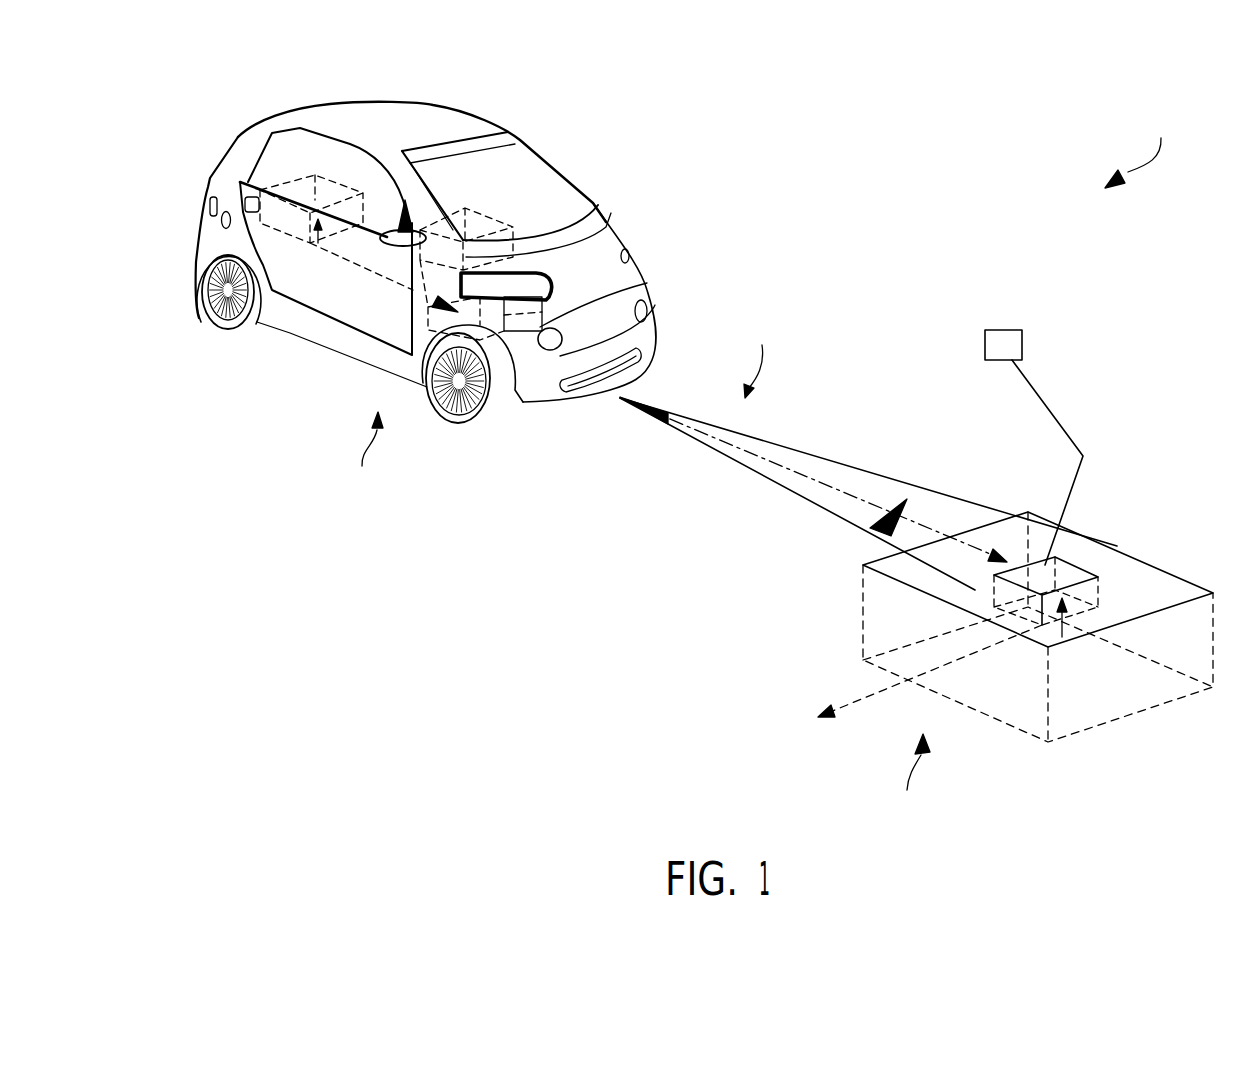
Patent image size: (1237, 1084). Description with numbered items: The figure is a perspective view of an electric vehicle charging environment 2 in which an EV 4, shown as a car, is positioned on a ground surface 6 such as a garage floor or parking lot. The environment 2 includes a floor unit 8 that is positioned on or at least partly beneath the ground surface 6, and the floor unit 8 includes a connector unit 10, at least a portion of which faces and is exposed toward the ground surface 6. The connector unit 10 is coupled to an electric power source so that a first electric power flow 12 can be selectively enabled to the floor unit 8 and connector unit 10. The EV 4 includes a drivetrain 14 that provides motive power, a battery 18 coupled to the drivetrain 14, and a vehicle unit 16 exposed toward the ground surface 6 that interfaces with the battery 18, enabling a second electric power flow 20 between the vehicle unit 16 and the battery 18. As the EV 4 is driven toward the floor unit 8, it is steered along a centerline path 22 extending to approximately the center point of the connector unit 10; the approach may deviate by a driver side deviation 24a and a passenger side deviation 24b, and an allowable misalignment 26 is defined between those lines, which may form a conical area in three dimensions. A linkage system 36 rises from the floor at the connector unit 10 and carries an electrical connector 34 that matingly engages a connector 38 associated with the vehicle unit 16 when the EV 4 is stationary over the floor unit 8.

The electric vehicle charging environment 2 is at (1136, 144).
The electric vehicle 4 is at (548, 163).
The ground surface 6 is at (643, 571).
The floor unit 8 is at (1148, 562).
The connector unit 10 is at (1045, 568).
The first electric power flow 12 is at (852, 694).
The drivetrain 14 is at (475, 213).
The vehicle unit 16 is at (507, 340).
The battery 18 is at (312, 174).
The second electric power flow 20 is at (378, 280).
The centerline path 22 is at (790, 466).
The driver side deviation 24a is at (937, 500).
The passenger side deviation 24b is at (700, 442).
The allowable misalignment 26 is at (896, 497).
The electrical connector 34 is at (1012, 342).
The linkage system 36 is at (1045, 399).
The connector 38 is at (630, 276).